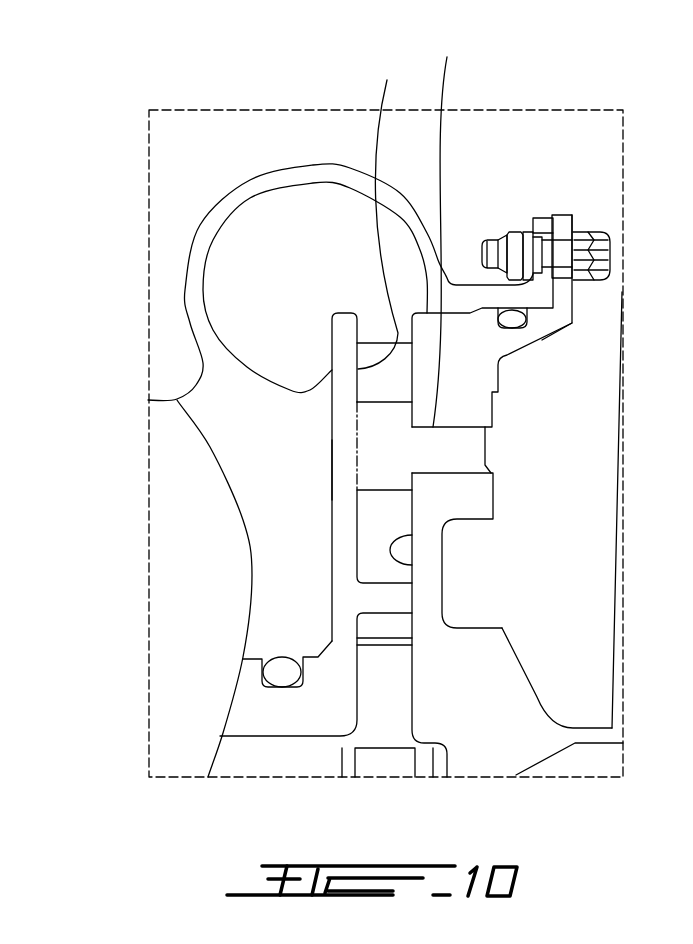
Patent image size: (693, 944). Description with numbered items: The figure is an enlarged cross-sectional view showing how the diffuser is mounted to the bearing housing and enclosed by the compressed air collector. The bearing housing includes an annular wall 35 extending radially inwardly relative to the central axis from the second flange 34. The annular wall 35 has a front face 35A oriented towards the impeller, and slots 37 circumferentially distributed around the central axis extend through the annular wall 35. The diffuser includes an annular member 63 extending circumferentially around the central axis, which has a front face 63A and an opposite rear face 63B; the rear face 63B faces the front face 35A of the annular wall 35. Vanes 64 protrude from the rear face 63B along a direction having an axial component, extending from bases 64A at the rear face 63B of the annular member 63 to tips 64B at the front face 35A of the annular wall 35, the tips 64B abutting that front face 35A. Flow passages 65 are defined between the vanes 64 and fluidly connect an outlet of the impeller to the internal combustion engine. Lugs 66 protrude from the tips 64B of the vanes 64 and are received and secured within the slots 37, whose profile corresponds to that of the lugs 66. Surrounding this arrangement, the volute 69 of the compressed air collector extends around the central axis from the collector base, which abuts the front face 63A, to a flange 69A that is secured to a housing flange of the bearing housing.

The second flange 34 is at (546, 185).
The annular wall 35 is at (470, 677).
The front face 35A is at (400, 556).
The slots 37 is at (451, 229).
The annular member 63 is at (345, 434).
The front face 63A is at (330, 472).
The rear face 63B is at (386, 211).
The vanes 64 is at (385, 443).
The bases 64A is at (357, 455).
The tips 64B is at (413, 482).
The flow passages 65 is at (376, 574).
The lugs 66 is at (452, 443).
The volute 69 is at (266, 182).
The flange 69A is at (558, 222).